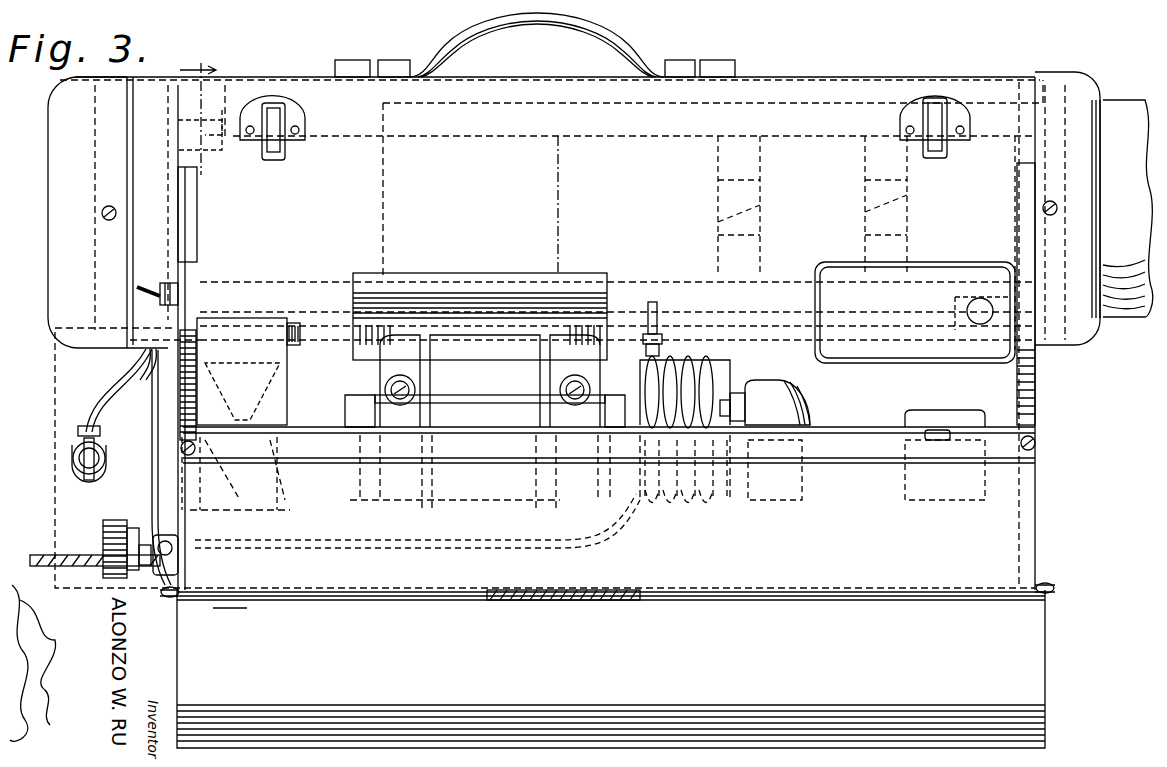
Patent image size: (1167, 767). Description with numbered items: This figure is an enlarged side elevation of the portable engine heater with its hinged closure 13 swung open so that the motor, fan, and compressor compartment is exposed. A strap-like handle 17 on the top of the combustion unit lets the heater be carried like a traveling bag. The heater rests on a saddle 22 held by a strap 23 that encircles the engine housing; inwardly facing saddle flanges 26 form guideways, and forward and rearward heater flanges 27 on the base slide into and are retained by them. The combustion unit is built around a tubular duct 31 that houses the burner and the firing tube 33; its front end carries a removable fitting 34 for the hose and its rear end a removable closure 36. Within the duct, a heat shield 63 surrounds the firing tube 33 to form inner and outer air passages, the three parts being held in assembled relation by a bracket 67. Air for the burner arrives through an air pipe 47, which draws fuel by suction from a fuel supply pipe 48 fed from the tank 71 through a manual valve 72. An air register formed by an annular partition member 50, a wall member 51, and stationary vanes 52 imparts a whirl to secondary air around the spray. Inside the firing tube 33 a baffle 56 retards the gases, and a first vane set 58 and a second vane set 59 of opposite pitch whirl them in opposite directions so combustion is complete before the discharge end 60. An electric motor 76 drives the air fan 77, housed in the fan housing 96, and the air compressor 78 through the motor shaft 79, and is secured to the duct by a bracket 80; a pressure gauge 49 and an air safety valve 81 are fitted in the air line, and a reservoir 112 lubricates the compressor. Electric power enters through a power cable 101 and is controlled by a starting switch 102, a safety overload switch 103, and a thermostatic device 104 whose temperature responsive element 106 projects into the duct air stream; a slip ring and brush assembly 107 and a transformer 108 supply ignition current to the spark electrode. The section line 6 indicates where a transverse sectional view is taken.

The section line 6 is at (213, 333).
The closure 13 is at (880, 425).
The handle 17 is at (630, 40).
The saddle 22 is at (1040, 636).
The strap 23 is at (530, 600).
The saddle flanges 26 is at (178, 598).
The heater flanges 27 is at (165, 600).
The duct 31 is at (298, 77).
The firing tube 33 is at (360, 140).
The fitting 34 is at (1095, 82).
The closure 36 is at (52, 107).
The air pipe 47 is at (658, 310).
The fuel supply pipe 48 is at (105, 370).
The pressure gauge 49 is at (118, 518).
The annular partition member 50 is at (232, 98).
The wall member 51 is at (222, 168).
The stationary vanes 52 is at (172, 150).
The baffle 56 is at (562, 170).
The first vane set 58 is at (762, 170).
The second vane set 59 is at (862, 165).
The discharge end 60 is at (1015, 162).
The heat shield 63 is at (742, 103).
The bracket 67 is at (400, 90).
The tank 71 is at (58, 496).
The valve 72 is at (100, 432).
The electric motor 76 is at (485, 381).
The air fan 77 is at (285, 500).
The air compressor 78 is at (695, 505).
The motor shaft 79 is at (295, 427).
The bracket 80 is at (468, 273).
The air safety valve 81 is at (160, 575).
The fan housing 96 is at (288, 358).
The power cable 101 is at (80, 555).
The starting switch 102 is at (152, 283).
The safety overload switch 103 is at (985, 505).
The thermostatic device 104 is at (885, 363).
The temperature responsive element 106 is at (983, 325).
The slip ring and brush assembly 107 is at (560, 390).
The transformer 108 is at (842, 535).
The reservoir 112 is at (800, 390).